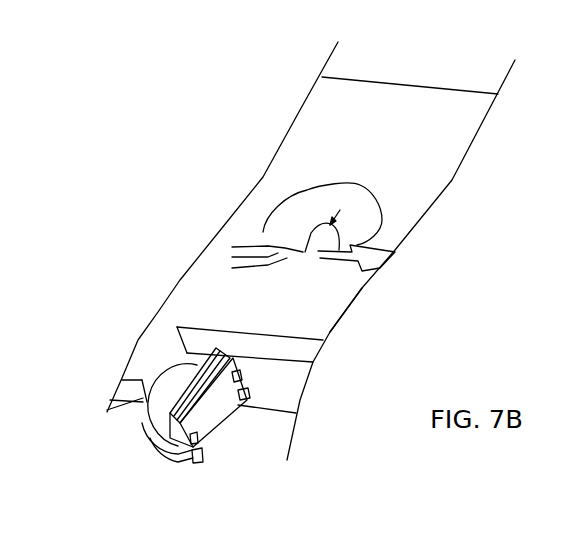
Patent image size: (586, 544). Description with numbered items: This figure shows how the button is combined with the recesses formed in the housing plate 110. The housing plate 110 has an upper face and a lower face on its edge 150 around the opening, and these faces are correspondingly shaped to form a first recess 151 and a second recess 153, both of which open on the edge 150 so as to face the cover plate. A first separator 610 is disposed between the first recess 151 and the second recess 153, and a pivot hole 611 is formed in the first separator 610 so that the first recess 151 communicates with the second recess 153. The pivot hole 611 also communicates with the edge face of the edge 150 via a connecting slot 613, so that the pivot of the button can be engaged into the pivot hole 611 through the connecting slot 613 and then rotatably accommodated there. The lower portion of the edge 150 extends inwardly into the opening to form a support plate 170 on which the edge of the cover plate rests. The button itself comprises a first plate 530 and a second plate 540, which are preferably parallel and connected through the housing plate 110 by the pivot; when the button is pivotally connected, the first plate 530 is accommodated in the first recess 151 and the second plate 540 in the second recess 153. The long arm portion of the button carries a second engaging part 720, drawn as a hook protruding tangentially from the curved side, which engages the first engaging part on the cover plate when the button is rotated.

The housing plate 110 is at (422, 113).
The pivot hole 611 is at (267, 237).
The connecting slot 613 is at (317, 240).
The first recess 151 is at (284, 231).
The first separator 610 is at (278, 253).
The second recess 153 is at (287, 258).
The edge 150 is at (372, 257).
The support plate 170 is at (322, 297).
The first plate 530 is at (172, 397).
The second plate 540 is at (178, 462).
The second engaging part 720 is at (196, 462).